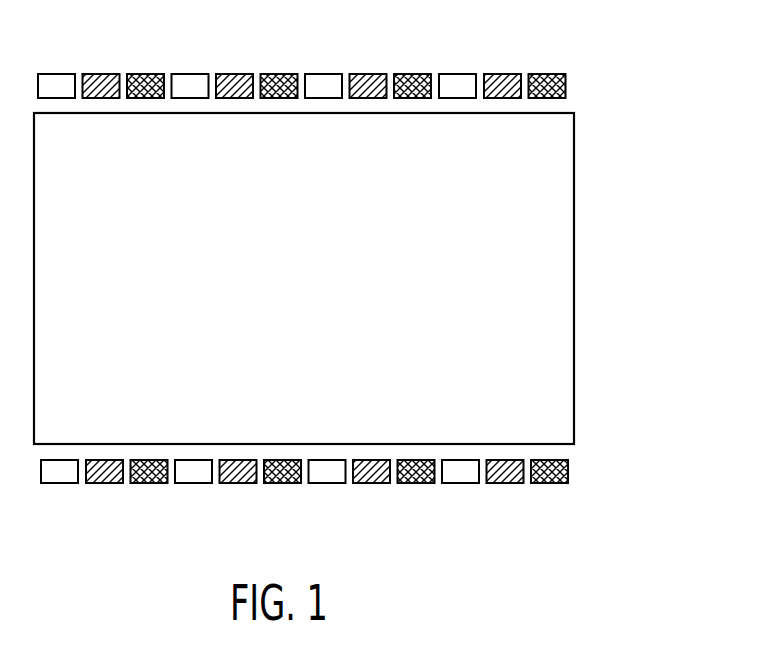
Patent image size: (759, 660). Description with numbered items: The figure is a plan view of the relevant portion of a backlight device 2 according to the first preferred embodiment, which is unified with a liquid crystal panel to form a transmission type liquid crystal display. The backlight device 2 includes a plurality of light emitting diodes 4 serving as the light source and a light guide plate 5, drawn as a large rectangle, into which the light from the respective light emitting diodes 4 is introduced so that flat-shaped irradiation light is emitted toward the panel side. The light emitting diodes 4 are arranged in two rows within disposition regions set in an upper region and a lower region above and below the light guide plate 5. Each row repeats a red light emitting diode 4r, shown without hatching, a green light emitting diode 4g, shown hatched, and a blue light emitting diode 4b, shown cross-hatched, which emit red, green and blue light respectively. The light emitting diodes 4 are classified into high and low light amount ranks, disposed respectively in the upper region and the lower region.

The backlight device 2 is at (618, 276).
The light emitting diodes 4 is at (350, 279).
The red light emitting diode 4r is at (455, 85).
The green light emitting diode 4g is at (498, 80).
The blue light emitting diode 4b is at (348, 279).
The light guide plate 5 is at (560, 337).